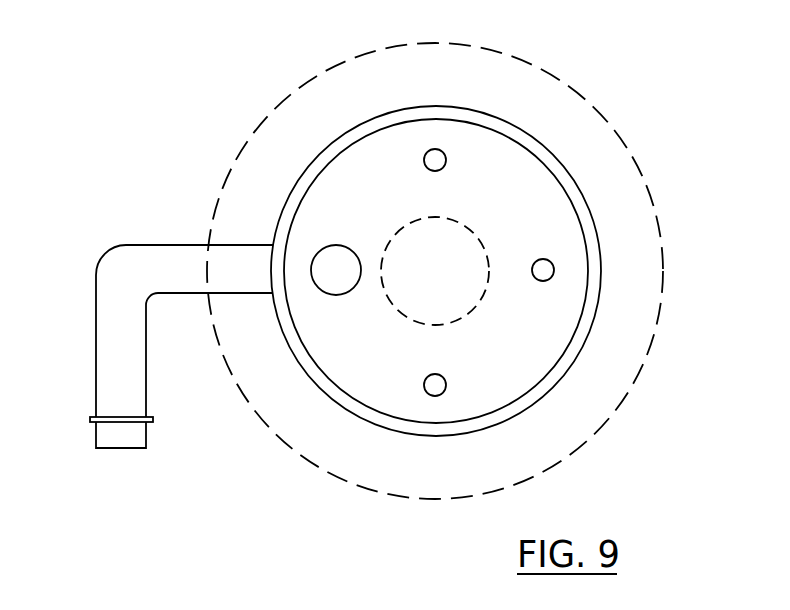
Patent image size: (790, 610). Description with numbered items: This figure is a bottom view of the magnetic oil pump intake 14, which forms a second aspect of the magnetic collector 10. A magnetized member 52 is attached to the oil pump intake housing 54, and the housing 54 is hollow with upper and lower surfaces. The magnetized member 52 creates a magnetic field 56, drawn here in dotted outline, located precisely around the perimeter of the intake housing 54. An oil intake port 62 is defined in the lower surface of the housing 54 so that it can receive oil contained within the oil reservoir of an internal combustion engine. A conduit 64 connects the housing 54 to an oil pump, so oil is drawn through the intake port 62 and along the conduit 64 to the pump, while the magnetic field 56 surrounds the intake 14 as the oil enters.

The magnetic collector 10 is at (320, 112).
The magnetic oil pump intake 14 is at (475, 90).
The magnetized member 52 is at (577, 202).
The oil pump intake housing 54 is at (313, 385).
The magnetic field 56 is at (290, 155).
The oil intake port 62 is at (338, 272).
The conduit 64 is at (117, 322).